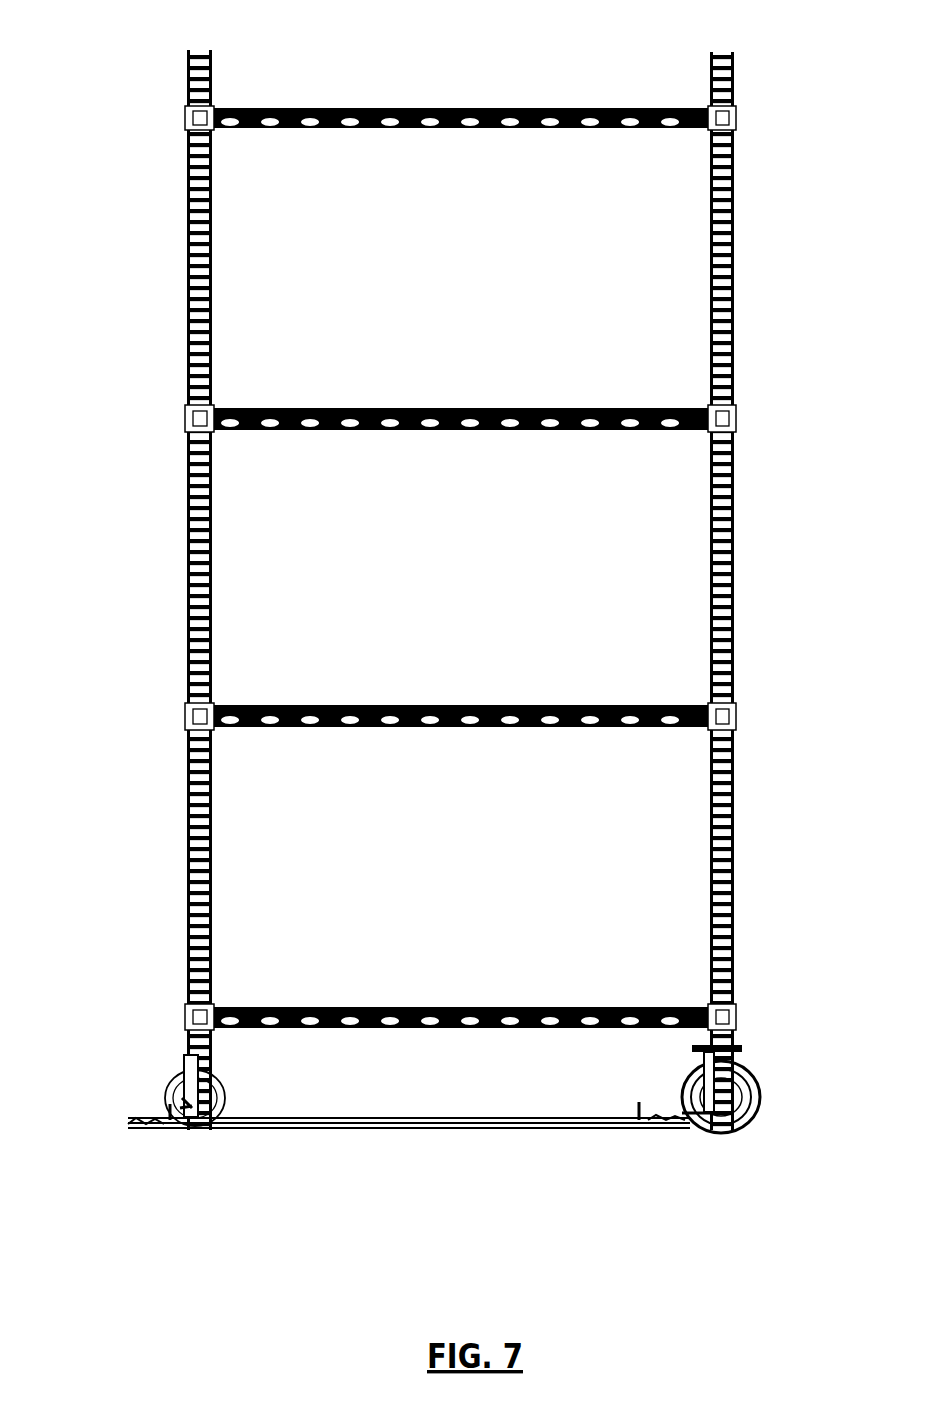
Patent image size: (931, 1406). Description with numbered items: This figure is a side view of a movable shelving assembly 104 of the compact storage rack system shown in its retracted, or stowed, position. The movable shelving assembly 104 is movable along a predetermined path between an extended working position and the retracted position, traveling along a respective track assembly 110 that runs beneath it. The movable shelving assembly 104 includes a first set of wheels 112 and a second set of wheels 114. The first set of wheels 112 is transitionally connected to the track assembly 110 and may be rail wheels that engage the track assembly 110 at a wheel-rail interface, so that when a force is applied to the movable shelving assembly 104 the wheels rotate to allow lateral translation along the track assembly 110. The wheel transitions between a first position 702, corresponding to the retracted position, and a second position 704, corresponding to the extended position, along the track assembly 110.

The movable shelving assembly 104 is at (395, 77).
The track assembly 110 is at (466, 1106).
The first set of wheels 112 is at (181, 1086).
The second set of wheels 114 is at (684, 1086).
The first position 702 is at (186, 1106).
The second position 704 is at (633, 1118).